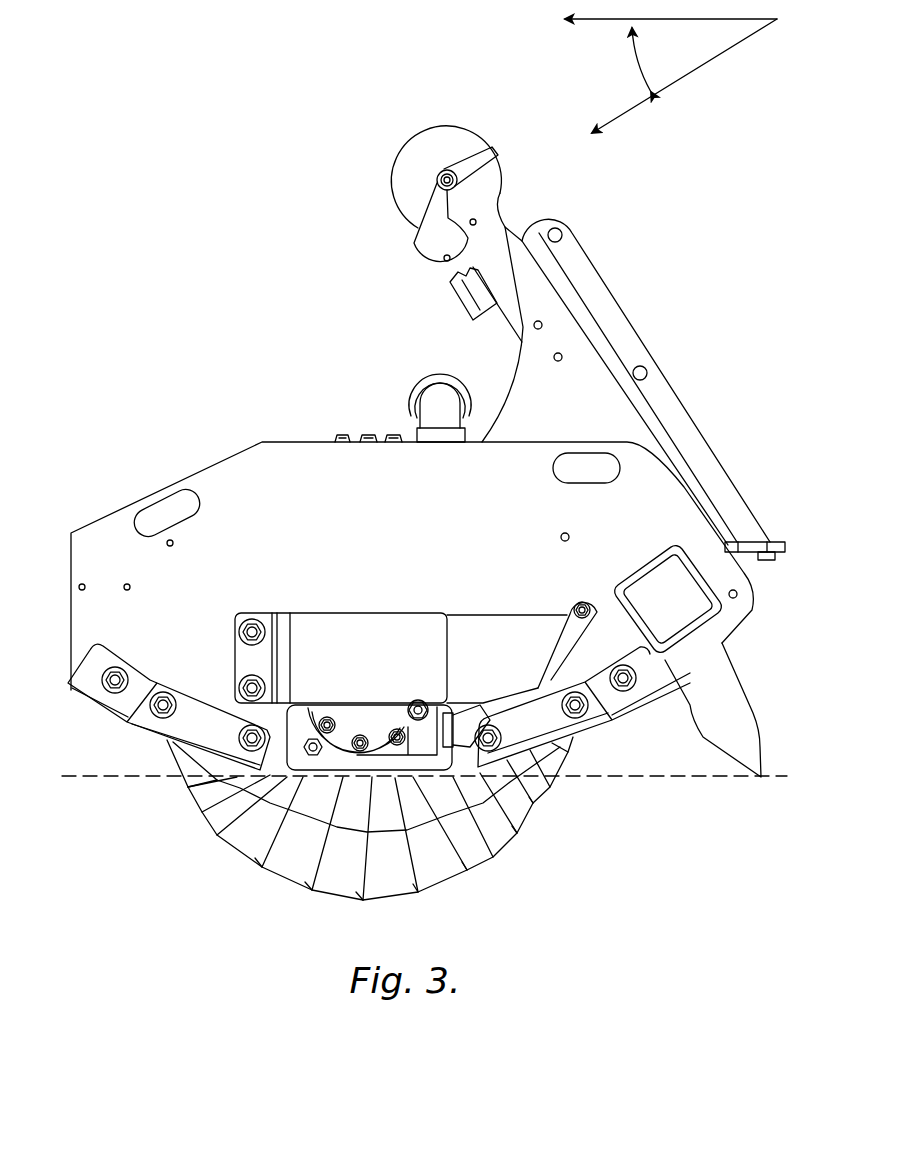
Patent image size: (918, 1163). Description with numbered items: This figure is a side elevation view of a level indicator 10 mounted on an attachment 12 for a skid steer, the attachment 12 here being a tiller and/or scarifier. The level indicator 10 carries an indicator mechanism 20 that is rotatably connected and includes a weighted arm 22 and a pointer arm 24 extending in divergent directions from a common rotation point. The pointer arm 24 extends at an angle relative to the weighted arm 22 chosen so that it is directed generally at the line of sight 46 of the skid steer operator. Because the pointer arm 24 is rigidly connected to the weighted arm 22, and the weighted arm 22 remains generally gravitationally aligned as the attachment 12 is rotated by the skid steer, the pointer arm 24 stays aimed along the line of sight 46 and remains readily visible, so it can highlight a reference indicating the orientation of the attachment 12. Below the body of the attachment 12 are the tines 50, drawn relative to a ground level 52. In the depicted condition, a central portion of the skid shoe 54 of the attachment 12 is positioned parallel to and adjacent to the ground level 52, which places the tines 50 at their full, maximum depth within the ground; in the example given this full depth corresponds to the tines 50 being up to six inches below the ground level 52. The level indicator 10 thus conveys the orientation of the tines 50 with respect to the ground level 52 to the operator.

The level indicator 10 is at (352, 137).
The attachment 12 is at (217, 437).
The indicator mechanism 20 is at (422, 197).
The weighted arm 22 is at (425, 252).
The pointer arm 24 is at (477, 160).
The line of sight 46 is at (724, 52).
The tines 50 is at (440, 853).
The ground level 52 is at (108, 776).
The skid shoe 54 is at (283, 773).